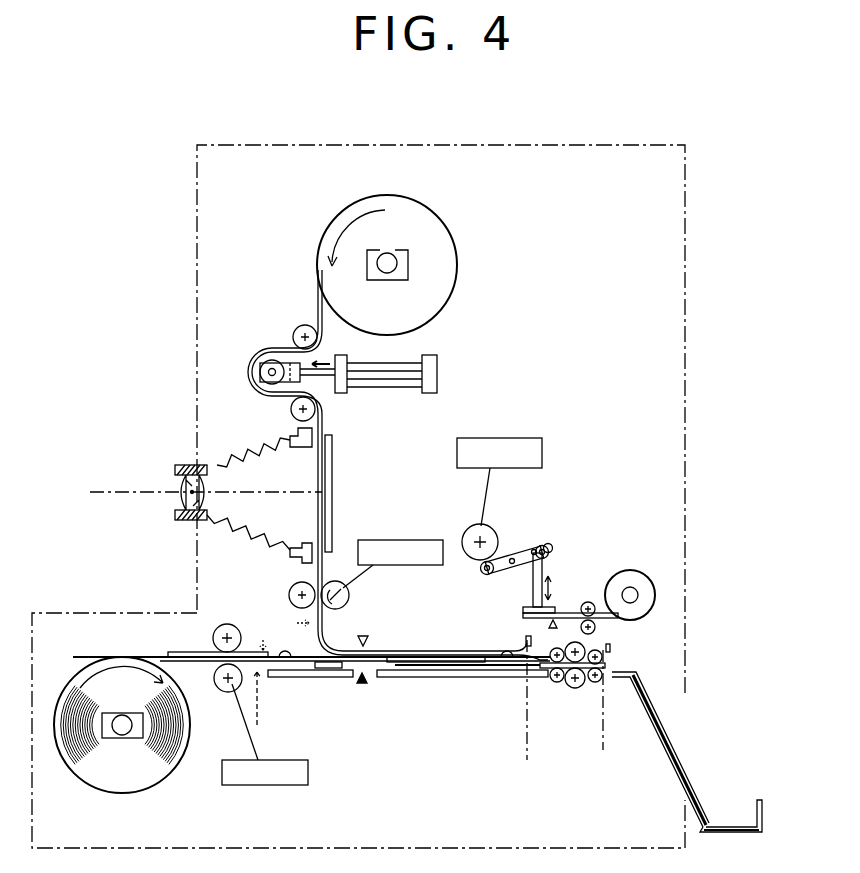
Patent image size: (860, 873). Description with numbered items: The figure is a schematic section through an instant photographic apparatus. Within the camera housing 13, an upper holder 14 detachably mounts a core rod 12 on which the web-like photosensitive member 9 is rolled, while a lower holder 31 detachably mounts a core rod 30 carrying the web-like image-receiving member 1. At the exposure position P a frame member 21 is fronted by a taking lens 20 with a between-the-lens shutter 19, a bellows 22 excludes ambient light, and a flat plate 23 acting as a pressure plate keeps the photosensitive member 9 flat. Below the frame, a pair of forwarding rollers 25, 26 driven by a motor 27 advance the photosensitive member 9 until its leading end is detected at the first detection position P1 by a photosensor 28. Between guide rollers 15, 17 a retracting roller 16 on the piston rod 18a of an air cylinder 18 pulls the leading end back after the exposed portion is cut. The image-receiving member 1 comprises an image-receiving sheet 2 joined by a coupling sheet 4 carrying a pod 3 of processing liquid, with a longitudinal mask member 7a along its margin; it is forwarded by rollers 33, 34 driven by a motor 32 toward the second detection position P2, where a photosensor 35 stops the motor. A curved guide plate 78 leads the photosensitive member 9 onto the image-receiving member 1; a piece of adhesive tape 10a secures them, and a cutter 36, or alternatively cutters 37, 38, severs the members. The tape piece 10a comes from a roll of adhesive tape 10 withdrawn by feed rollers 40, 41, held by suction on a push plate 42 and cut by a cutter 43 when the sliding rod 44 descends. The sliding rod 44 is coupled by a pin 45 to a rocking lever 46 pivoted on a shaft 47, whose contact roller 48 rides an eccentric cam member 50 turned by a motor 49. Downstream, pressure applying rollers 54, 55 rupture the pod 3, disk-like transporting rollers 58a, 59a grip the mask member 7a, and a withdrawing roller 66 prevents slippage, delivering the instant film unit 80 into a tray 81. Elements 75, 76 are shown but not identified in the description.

The image-receiving member 1 is at (88, 760).
The image-receiving sheet 2 is at (430, 668).
The pod 3 is at (505, 662).
The coupling sheet 4 is at (347, 678).
The longitudinal mask member 7a is at (412, 663).
The photosensitive member 9 is at (430, 243).
The roll of adhesive tape 10 is at (638, 578).
The adhesive tape piece 10a is at (522, 670).
The core rod 12 is at (389, 255).
The camera housing 13 is at (197, 291).
The holder 14 is at (410, 262).
The guide roller 15 is at (305, 325).
The retracting roller 16 is at (268, 360).
The guide roller 17 is at (291, 409).
The air cylinder 18 is at (418, 372).
The piston rod 18a is at (318, 378).
The between-the-lens shutter 19 is at (180, 505).
The taking lens 20 is at (178, 490).
The frame member 21 is at (302, 545).
The bellows 22 is at (215, 462).
The flat plate 23 is at (333, 452).
The forwarding roller 25 is at (337, 580).
The forwarding roller 26 is at (292, 590).
The motor 27 is at (385, 540).
The photosensor 28 is at (525, 640).
The core rod 30 is at (125, 740).
The holder 31 is at (143, 735).
The motor 32 is at (255, 786).
The forwarding roller 33 is at (222, 692).
The forwarding roller 34 is at (227, 624).
The photosensor 35 is at (612, 648).
The cutter 36 is at (368, 640).
The cutter 37 is at (348, 620).
The cutter 38 is at (273, 706).
The feed roller 40 is at (588, 602).
The feed roller 41 is at (597, 612).
The push plate 42 is at (525, 607).
The cutter 43 is at (548, 623).
The sliding rod 44 is at (552, 551).
The pin 45 is at (537, 552).
The rocking lever 46 is at (548, 548).
The shaft 47 is at (510, 556).
The contact roller 48 is at (480, 570).
The motor 49 is at (512, 438).
The eccentric cam member 50 is at (470, 528).
The pressure applying roller 54 is at (564, 589).
The pressure applying roller 55 is at (555, 683).
The disk-like transporting roller 58a is at (585, 652).
The disk-like transporting roller 59a is at (575, 690).
The withdrawing roller 66 is at (592, 683).
The plate 75 is at (332, 670).
The guide plate 76 is at (455, 678).
The curved guide plate 78 is at (320, 677).
The instant film unit 80 is at (672, 740).
The tray 81 is at (758, 800).
The exposure position P is at (327, 492).
The first detection position P1 is at (529, 710).
The second detection position P2 is at (606, 715).